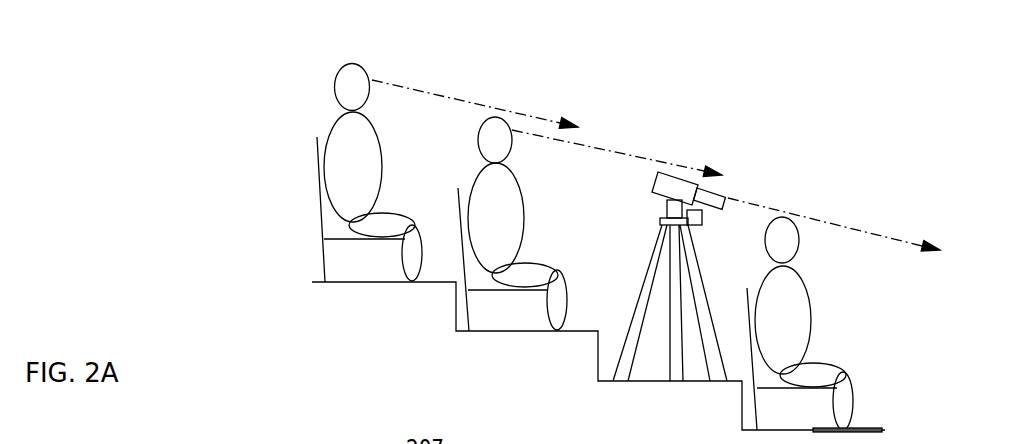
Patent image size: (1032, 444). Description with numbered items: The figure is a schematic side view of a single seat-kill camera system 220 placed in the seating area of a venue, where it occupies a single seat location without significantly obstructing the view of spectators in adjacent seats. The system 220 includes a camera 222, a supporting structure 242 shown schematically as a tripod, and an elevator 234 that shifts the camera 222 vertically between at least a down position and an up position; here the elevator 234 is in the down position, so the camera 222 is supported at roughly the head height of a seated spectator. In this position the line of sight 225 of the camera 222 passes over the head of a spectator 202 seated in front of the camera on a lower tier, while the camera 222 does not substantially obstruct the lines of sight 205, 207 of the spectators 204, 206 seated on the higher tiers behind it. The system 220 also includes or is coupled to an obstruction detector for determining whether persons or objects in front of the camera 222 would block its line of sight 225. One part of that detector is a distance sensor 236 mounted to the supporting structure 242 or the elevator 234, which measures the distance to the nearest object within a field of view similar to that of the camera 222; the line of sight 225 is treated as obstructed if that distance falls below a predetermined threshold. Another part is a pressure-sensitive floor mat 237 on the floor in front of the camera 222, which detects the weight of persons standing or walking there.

The spectator 202 is at (812, 323).
The spectator 204 is at (490, 272).
The line of sight 205 is at (637, 155).
The spectator 206 is at (347, 220).
The line of sight 207 is at (470, 100).
The single seat-kill camera system 220 is at (762, 214).
The camera 222 is at (692, 172).
The line of sight 225 is at (834, 223).
The elevator 234 is at (667, 208).
The distance sensor 236 is at (703, 217).
The pressure-sensitive floor mat 237 is at (863, 430).
The supporting structure 242 is at (648, 277).